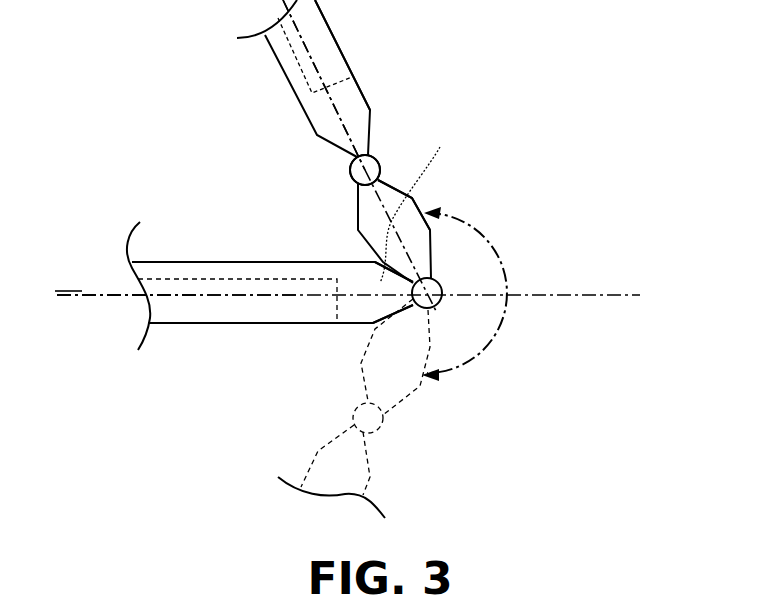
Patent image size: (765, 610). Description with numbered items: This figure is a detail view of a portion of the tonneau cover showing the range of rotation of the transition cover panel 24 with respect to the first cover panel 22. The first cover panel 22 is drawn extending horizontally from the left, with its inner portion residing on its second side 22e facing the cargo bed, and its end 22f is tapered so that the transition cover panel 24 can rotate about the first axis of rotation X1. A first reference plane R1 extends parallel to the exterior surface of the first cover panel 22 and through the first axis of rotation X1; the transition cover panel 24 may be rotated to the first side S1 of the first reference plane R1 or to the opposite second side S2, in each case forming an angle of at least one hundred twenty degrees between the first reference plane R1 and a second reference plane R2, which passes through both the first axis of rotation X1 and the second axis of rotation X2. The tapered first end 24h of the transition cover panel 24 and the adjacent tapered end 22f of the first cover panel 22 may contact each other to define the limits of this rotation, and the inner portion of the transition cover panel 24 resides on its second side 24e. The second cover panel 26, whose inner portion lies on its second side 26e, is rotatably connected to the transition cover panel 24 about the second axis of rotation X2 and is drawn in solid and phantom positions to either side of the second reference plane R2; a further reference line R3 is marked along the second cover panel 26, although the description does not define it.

The first cover panel 22 is at (240, 262).
The second side of the first cover panel 22e is at (257, 323).
The end of the first cover panel 22f is at (380, 283).
The transition cover panel 24 is at (442, 250).
The second side of the transition cover panel 24e is at (428, 213).
The first end of the transition cover panel 24h is at (421, 203).
The second cover panel 26 is at (364, 82).
The second side of the second cover panel 26e is at (350, 62).
The first reference plane R1 is at (104, 294).
The second reference plane R2 is at (400, 190).
The third region R3 is at (305, 44).
The first side of the first reference plane S1 is at (347, 283).
The second side of the first reference plane S2 is at (128, 307).
The first axis of rotation X1 is at (440, 304).
The second axis of rotation X2 is at (348, 177).